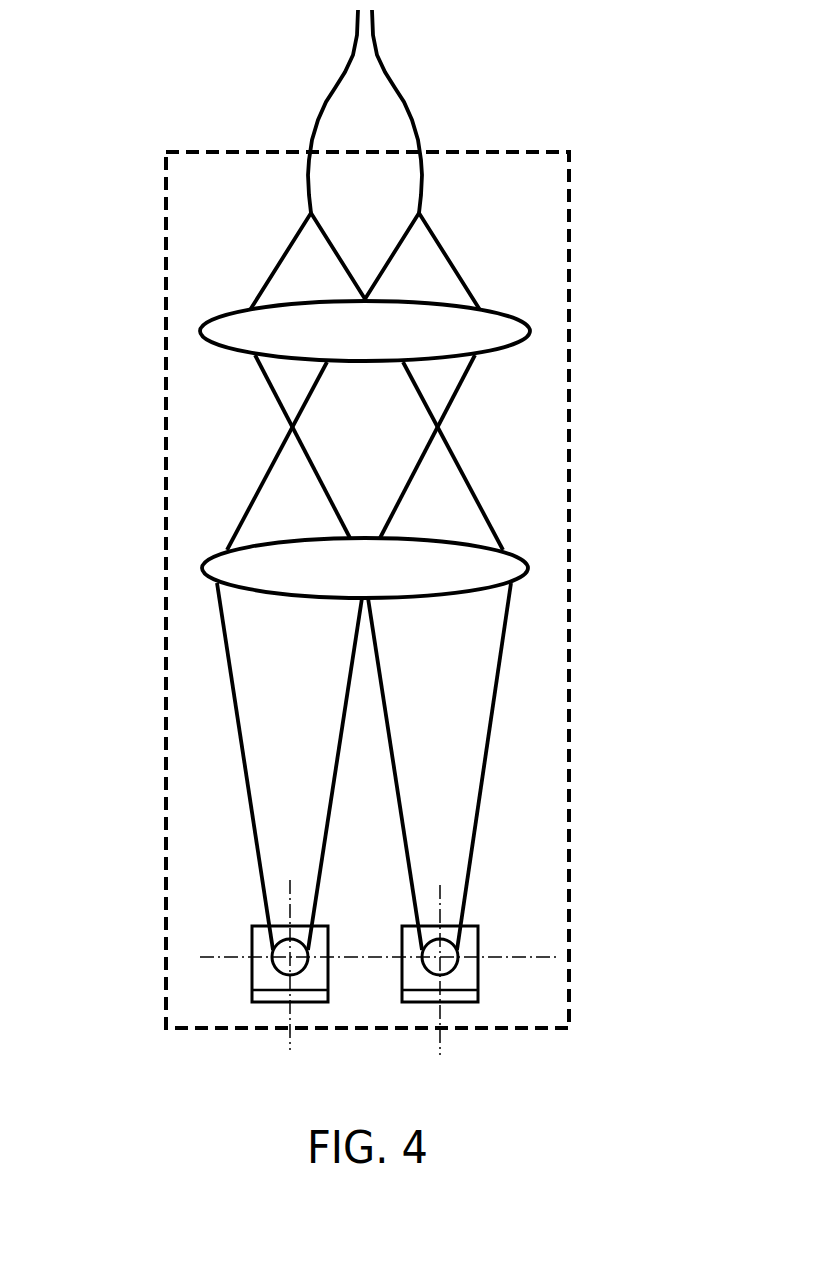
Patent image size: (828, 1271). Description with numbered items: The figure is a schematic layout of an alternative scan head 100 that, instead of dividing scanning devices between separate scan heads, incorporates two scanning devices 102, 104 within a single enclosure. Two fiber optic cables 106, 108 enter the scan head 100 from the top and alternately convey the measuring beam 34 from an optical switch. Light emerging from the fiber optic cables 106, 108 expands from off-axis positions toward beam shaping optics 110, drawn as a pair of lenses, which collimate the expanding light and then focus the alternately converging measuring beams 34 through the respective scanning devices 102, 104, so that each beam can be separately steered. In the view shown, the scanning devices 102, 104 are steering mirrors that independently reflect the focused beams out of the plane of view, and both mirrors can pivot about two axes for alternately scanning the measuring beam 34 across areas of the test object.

The scan head 100 is at (162, 231).
The scanning device 102 is at (252, 930).
The scanning device 104 is at (478, 946).
The fiber optic cable 106 is at (342, 90).
The fiber optic cable 108 is at (408, 118).
The beam shaping optics 110 is at (530, 328).
The measuring beam 34 is at (278, 268).